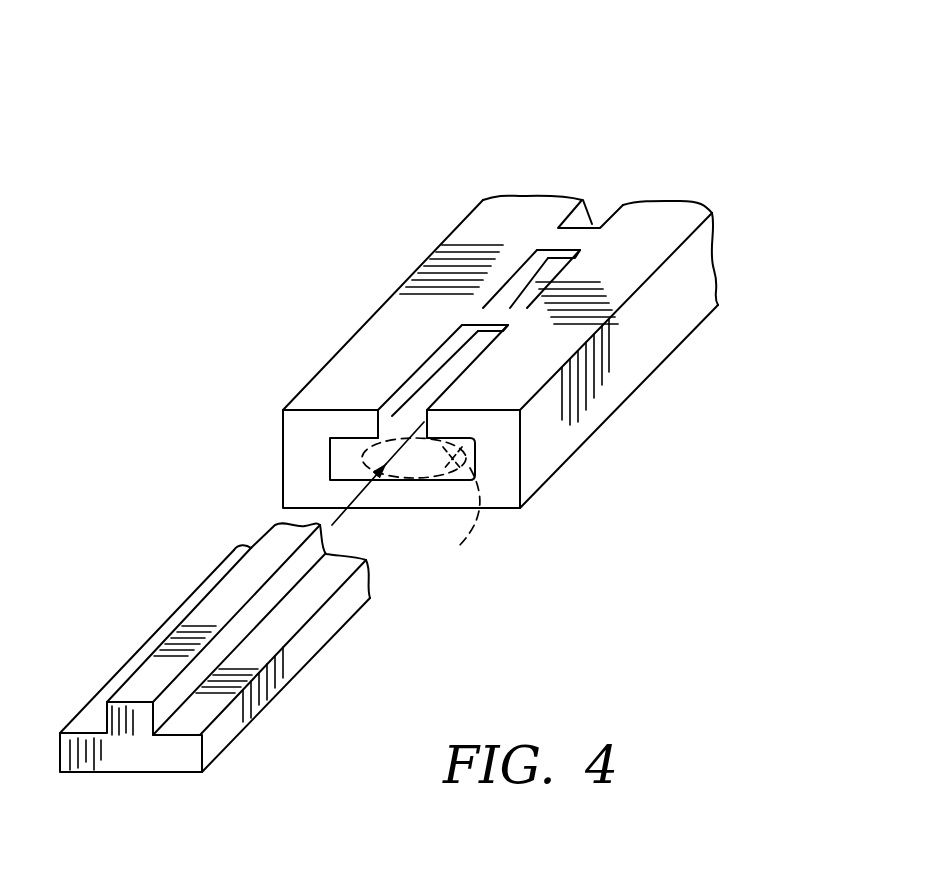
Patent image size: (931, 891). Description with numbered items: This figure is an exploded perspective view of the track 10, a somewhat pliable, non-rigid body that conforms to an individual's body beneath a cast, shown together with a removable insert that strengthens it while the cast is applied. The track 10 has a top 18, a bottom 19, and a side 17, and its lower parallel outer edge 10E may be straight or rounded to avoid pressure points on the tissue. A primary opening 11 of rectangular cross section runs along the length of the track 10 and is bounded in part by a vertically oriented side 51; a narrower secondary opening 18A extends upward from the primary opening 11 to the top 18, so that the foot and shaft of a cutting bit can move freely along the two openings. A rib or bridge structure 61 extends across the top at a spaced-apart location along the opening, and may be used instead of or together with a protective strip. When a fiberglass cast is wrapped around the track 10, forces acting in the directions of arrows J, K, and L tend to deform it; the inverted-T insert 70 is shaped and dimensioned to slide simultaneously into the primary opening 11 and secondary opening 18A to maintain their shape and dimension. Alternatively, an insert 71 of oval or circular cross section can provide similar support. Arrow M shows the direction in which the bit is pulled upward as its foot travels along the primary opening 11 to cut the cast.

The track 10 is at (286, 157).
The lower parallel outer edge 10E is at (625, 402).
The primary opening 11 is at (450, 428).
The side 17 is at (645, 362).
The top 18 is at (307, 398).
The secondary opening 18A is at (366, 422).
The bottom 19 is at (520, 512).
The vertically oriented side 51 is at (330, 453).
The rib or bridge structure 61 is at (582, 234).
The insert 70 is at (166, 583).
The insert 71 is at (425, 505).
The arrow J is at (518, 222).
The arrow K is at (362, 297).
The arrow L is at (661, 305).
The arrow M is at (609, 197).